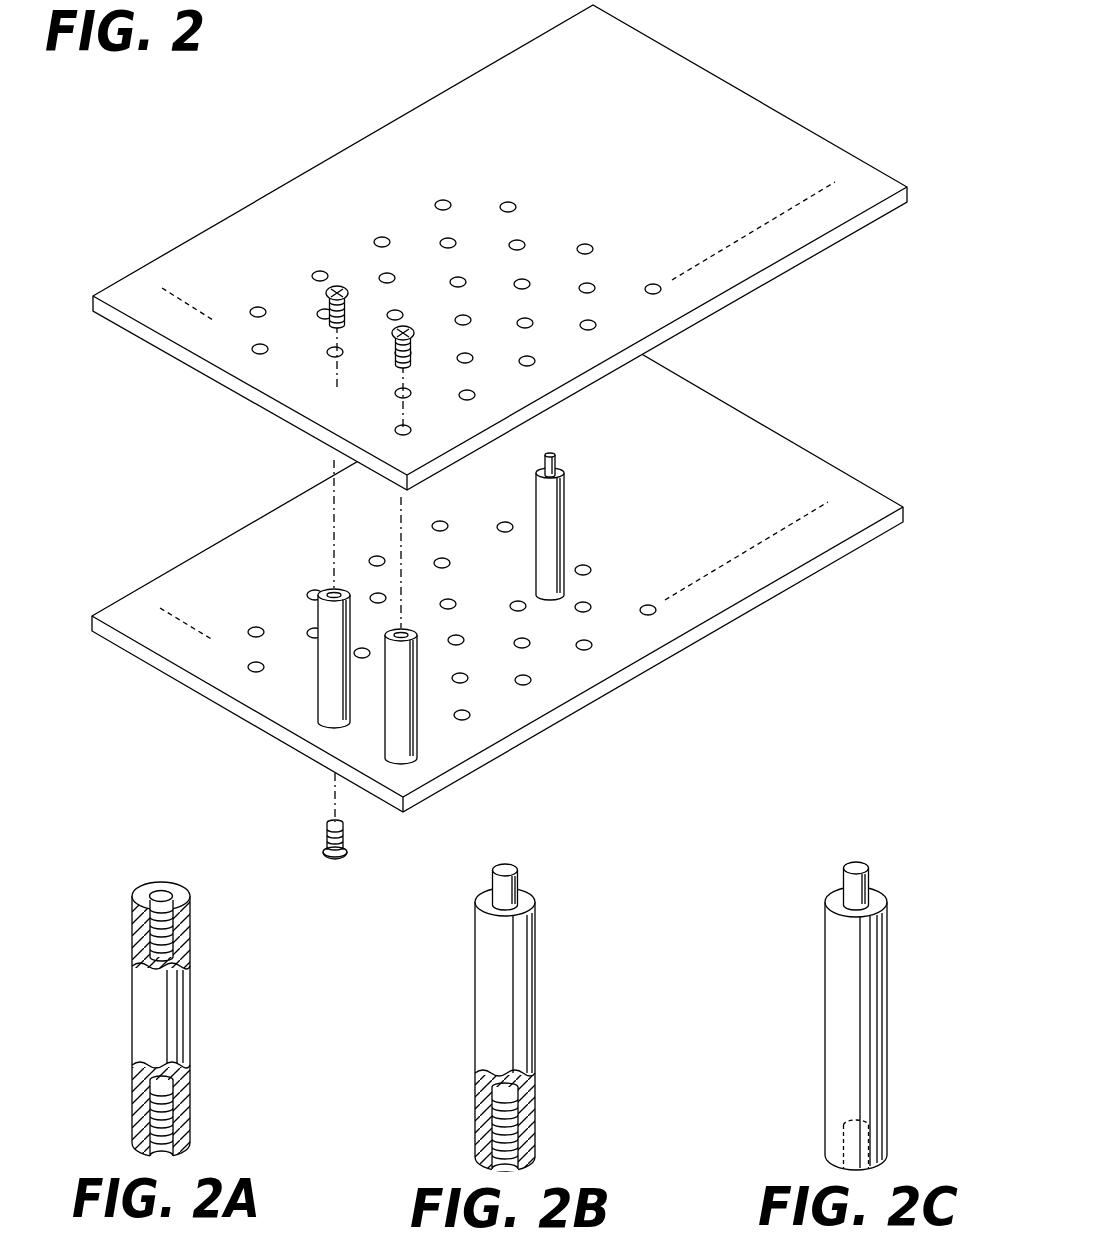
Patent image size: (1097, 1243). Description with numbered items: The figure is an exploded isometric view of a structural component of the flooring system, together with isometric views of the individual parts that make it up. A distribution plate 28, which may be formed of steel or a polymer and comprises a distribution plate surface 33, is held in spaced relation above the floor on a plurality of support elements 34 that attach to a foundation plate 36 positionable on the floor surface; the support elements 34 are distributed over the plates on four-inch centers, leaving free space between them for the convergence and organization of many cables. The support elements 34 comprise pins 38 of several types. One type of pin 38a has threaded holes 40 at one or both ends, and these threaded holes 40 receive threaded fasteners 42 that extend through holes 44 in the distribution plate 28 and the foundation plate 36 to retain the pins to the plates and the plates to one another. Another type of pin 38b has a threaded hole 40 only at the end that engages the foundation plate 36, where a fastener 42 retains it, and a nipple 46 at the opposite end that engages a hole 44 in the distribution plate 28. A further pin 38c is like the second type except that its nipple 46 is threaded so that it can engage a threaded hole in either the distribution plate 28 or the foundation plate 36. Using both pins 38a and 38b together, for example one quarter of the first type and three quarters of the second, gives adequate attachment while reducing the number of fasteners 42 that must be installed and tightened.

In FIG. 2, the distribution plate 28 is at (500, 247).
In FIG. 2, the distribution plate surface 33 is at (753, 100).
In FIG. 2, the support element 34 is at (565, 547).
In FIG. 2A, the support element 34 is at (130, 1003).
In FIG. 2B, the support element 34 is at (482, 1050).
In FIG. 2C, the support element 34 is at (832, 1068).
In FIG. 2, the foundation plate 36 is at (737, 587).
In FIG. 2, the pin 38 is at (328, 657).
In FIG. 2, the pin 38a is at (398, 728).
In FIG. 2A, the pin 38a is at (124, 993).
In FIG. 2, the pin 38b is at (609, 502).
In FIG. 2B, the pin 38b is at (505, 1008).
In FIG. 2C, the pin 38c is at (803, 992).
In FIG. 2A, the threaded hole 40 is at (150, 900).
In FIG. 2B, the threaded hole 40 is at (490, 1127).
In FIG. 2, the threaded fastener 42 is at (325, 295).
In FIG. 2, the hole 44 is at (330, 389).
In FIG. 2, the nipple 46 is at (558, 455).
In FIG. 2B, the nipple 46 is at (517, 880).
In FIG. 2C, the nipple 46 is at (843, 873).